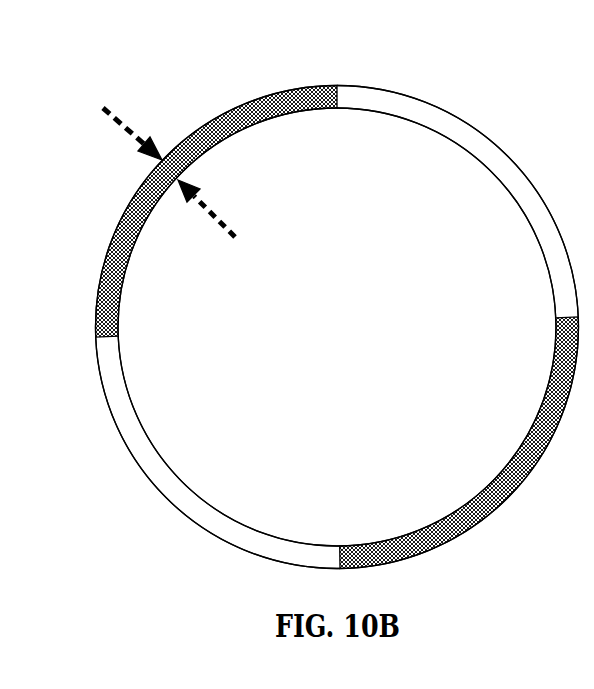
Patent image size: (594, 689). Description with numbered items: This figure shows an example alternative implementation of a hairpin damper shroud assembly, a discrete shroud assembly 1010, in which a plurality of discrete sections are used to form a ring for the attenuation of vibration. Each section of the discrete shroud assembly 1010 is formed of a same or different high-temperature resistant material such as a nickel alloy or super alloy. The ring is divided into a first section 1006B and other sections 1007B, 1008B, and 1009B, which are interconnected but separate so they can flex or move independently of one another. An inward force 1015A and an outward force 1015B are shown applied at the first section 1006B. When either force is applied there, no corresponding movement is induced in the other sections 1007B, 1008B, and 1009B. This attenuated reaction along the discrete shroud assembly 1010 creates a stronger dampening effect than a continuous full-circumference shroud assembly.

The discrete shroud assembly 1010 is at (452, 113).
The first section 1006B is at (277, 118).
The section 1007B is at (528, 221).
The section 1008B is at (417, 528).
The section 1009B is at (240, 522).
The inward force 1015A is at (99, 124).
The outward force 1015B is at (239, 220).